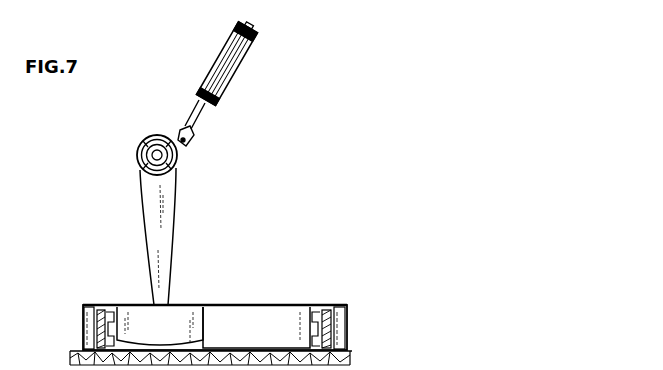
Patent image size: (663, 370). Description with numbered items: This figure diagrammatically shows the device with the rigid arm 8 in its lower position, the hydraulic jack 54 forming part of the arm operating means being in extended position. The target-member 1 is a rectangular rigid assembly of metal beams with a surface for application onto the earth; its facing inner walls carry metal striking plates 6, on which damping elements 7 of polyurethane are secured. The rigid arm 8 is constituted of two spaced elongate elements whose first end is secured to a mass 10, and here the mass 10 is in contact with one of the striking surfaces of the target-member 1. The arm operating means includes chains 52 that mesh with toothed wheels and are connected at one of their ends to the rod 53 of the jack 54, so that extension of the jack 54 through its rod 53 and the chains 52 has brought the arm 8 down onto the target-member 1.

The jack 54 is at (209, 47).
The rod 53 is at (197, 118).
The chains 52 is at (142, 142).
The rigid arm 8 is at (134, 232).
The target-member 1 is at (347, 291).
The damping elements 7 is at (309, 305).
The striking plates 6 is at (325, 305).
The mass 10 is at (193, 307).